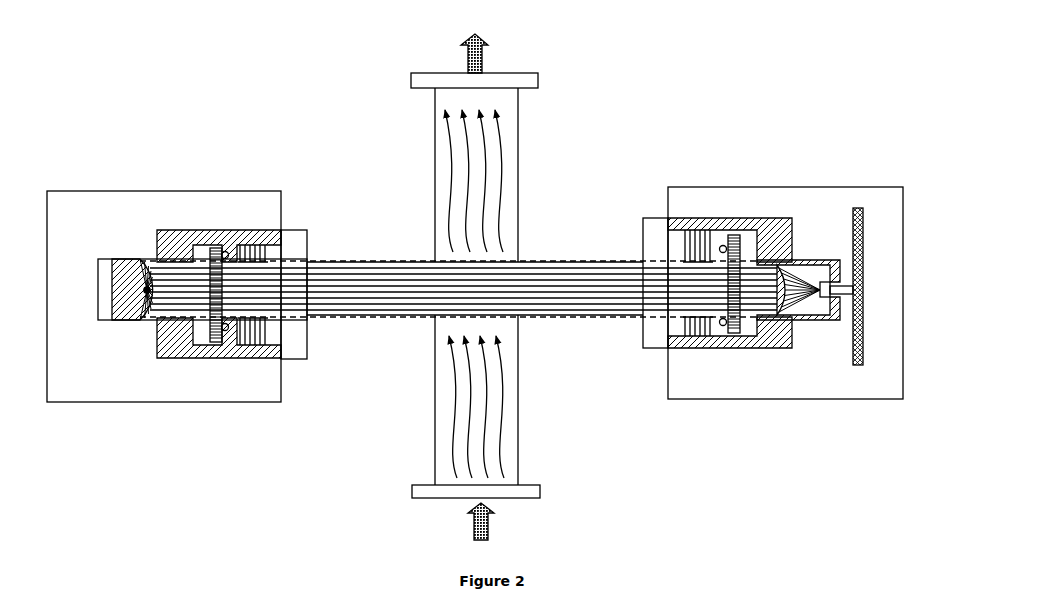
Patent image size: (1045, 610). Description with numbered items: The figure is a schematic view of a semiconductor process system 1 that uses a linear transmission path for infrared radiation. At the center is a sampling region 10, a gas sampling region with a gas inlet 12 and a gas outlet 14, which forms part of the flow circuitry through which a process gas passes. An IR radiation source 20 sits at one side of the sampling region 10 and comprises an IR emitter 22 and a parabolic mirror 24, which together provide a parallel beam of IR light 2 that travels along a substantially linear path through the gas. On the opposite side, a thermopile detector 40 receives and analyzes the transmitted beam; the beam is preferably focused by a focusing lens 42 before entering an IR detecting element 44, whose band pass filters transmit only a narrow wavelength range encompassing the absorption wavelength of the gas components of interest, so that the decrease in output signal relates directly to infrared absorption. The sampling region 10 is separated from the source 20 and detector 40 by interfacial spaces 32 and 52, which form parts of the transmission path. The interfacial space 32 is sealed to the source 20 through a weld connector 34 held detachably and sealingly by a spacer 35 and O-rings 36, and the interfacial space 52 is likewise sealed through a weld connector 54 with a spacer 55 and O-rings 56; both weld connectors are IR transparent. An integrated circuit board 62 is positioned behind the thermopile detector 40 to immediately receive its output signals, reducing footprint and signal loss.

The system 1 is at (256, 119).
The parallel beam of IR light 2 is at (463, 289).
The sampling region 10 is at (518, 170).
The gas inlet 12 is at (510, 498).
The gas outlet 14 is at (508, 73).
The IR radiation source 20 is at (89, 369).
The IR emitter 22 is at (148, 294).
The parabolic mirror 24 is at (122, 262).
The interfacial space 32 is at (352, 318).
The weld connector 34 is at (298, 343).
The spacer 35 is at (208, 346).
The O-rings 36 is at (238, 245).
The thermopile detector 40 is at (811, 384).
The focusing lens 42 is at (790, 262).
The IR detecting element 44 is at (825, 298).
The interfacial space 52 is at (575, 315).
The weld connector 54 is at (652, 348).
The spacer 55 is at (733, 336).
The O-rings 56 is at (717, 245).
The integrated circuit board 62 is at (864, 246).